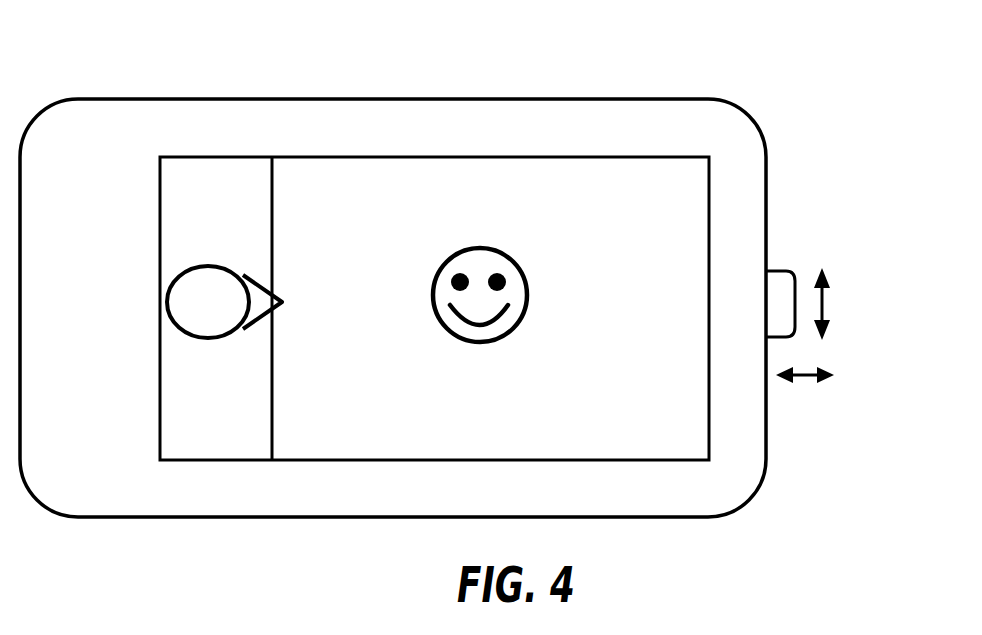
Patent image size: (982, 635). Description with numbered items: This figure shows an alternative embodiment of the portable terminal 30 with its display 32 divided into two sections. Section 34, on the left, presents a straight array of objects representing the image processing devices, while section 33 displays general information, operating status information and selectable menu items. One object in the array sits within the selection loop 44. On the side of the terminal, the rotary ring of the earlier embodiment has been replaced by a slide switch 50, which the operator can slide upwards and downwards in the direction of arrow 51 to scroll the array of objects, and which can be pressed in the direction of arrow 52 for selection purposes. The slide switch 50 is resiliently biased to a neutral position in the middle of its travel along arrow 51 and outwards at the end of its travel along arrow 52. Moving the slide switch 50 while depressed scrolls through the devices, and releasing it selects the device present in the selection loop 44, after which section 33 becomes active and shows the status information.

The portable terminal 30 is at (128, 50).
The display 32 is at (690, 157).
The section of the display 33 is at (538, 175).
The section of the display 34 is at (240, 170).
The selection loop 44 is at (168, 307).
The slide switch 50 is at (780, 271).
The arrow 51 is at (841, 304).
The arrow 52 is at (805, 393).